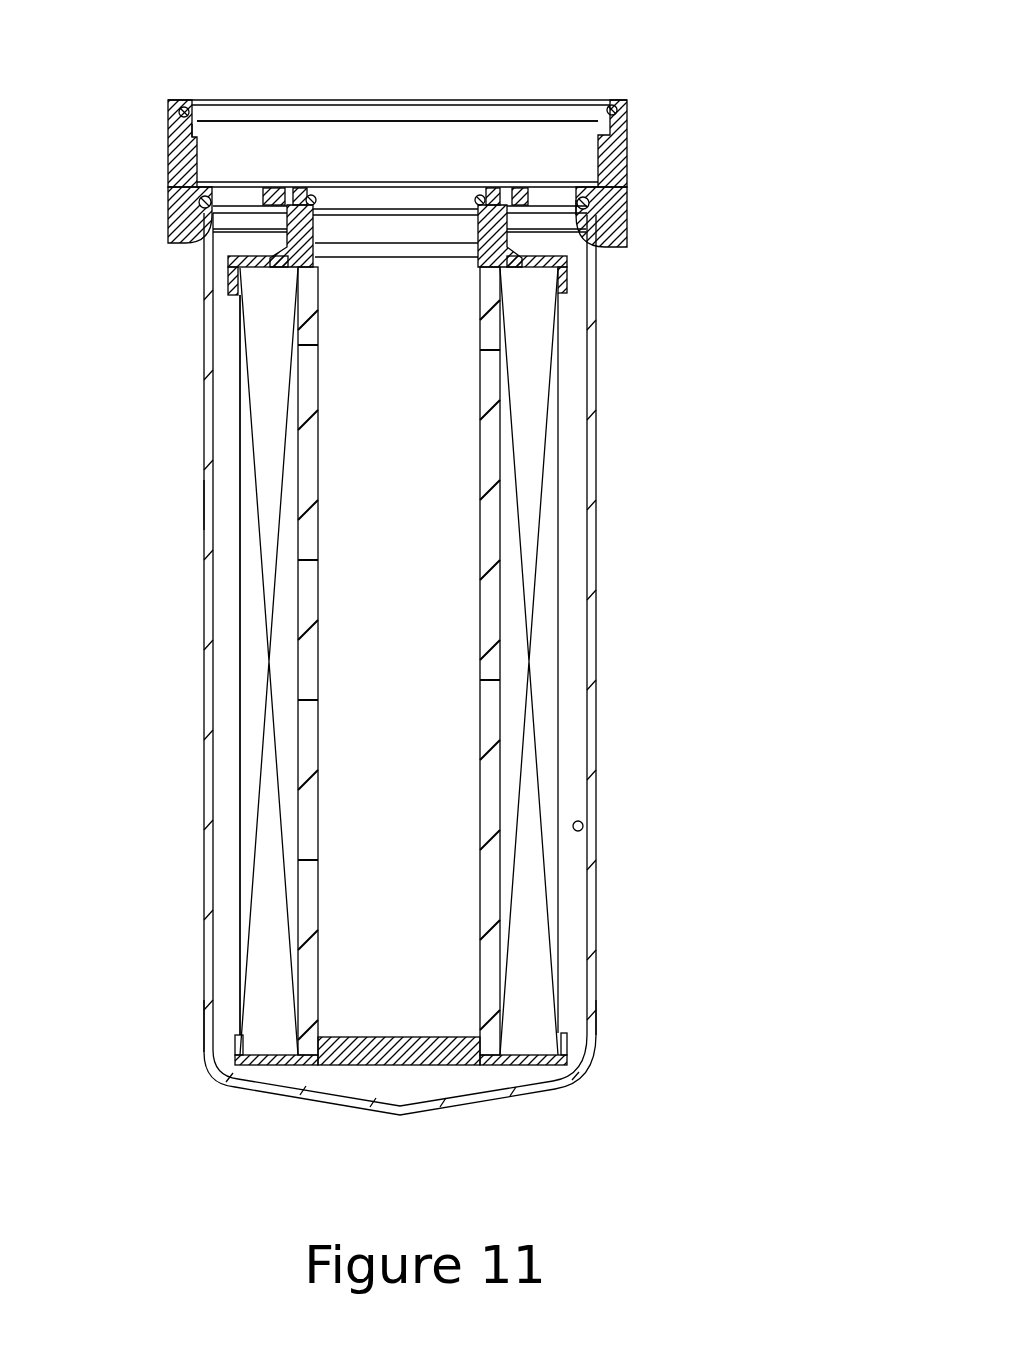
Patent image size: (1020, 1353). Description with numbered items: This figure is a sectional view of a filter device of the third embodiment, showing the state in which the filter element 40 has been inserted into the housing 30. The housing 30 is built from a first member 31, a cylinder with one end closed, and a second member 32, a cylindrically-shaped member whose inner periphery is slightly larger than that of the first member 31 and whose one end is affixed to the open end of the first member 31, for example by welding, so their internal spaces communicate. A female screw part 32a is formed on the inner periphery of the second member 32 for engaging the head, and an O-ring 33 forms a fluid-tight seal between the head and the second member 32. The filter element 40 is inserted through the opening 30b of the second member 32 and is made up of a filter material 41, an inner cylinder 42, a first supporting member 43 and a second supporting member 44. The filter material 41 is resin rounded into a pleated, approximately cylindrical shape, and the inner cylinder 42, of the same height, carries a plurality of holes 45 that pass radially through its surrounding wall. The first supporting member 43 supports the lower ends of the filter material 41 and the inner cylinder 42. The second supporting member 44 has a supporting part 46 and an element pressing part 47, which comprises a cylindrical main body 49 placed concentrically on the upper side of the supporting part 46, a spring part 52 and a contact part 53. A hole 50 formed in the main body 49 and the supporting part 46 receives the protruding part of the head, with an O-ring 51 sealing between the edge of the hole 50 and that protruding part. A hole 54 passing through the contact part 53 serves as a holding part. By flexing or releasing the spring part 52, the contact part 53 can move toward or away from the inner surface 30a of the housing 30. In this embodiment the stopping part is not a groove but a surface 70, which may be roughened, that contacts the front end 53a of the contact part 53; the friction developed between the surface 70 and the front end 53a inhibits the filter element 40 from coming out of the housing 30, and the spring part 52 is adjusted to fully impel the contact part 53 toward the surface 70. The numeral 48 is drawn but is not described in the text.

The housing 30 is at (600, 695).
The inner surface 30a is at (584, 827).
The opening 30b is at (543, 137).
The first member 31 is at (599, 546).
The second member 32 is at (628, 156).
The female screw part 32a is at (200, 138).
The O-ring 33 is at (617, 107).
The filter element 40 is at (567, 436).
The filter material 41 is at (532, 354).
The inner cylinder 42 is at (310, 588).
The first supporting member 43 is at (393, 1047).
The second supporting member 44 is at (575, 275).
The holes 45 is at (318, 352).
The supporting part 46 is at (268, 262).
The element pressing part 47 is at (321, 220).
The flow direction 48 is at (212, 506).
The main body 49 is at (478, 215).
The hole 50 is at (398, 237).
The O-ring 51 is at (323, 207).
The spring part 52 is at (273, 190).
The contact part 53 is at (557, 198).
The front end 53a is at (594, 204).
The hole 54 is at (244, 192).
The surface 70 is at (215, 204).